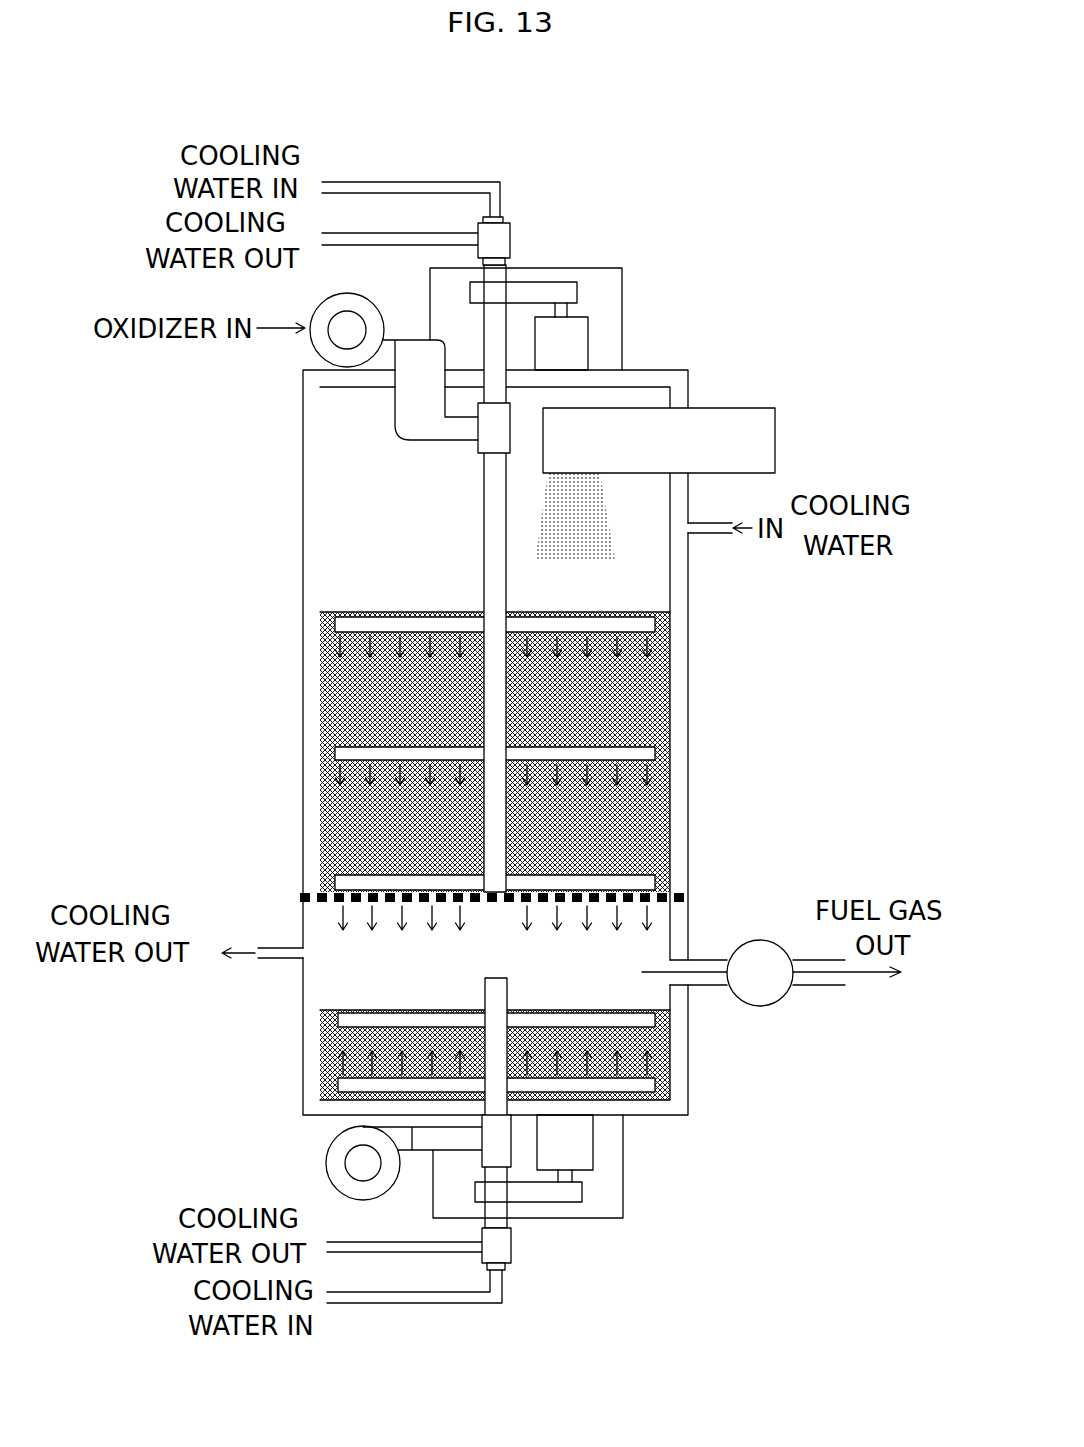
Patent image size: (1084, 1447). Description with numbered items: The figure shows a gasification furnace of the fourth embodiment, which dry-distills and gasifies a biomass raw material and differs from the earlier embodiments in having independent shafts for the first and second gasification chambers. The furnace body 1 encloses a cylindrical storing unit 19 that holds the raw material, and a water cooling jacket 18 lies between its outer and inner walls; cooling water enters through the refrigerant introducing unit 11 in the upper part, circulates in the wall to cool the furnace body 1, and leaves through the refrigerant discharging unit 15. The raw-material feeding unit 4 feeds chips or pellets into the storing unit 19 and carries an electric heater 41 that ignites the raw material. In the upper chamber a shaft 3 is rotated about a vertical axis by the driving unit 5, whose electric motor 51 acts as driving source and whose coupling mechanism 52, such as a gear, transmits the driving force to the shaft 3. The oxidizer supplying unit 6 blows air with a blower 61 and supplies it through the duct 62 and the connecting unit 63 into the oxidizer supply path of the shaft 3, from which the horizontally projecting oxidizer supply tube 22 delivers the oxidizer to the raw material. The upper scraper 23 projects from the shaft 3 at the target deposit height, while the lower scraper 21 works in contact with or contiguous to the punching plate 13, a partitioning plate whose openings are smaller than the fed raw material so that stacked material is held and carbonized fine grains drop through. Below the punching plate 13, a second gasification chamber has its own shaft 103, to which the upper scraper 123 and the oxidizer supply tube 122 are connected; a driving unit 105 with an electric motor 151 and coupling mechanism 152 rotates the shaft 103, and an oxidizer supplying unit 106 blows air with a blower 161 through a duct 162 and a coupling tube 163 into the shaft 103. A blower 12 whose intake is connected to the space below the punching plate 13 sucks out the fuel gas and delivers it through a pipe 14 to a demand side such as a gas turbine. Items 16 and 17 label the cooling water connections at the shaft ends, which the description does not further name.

The furnace body 1 is at (702, 721).
The shaft 3 is at (497, 492).
The raw-material feeding unit 4 is at (735, 420).
The electric heater 41 is at (737, 462).
The driving unit 5 is at (623, 253).
The electric motor 51 is at (575, 343).
The coupling mechanism 52 is at (528, 292).
The oxidizer supplying unit 6 is at (341, 385).
The blower 61 is at (321, 355).
The duct 62 is at (440, 410).
The connecting unit 63 is at (490, 440).
The refrigerant introducing unit 11 is at (712, 533).
The blower 12 is at (757, 945).
The punching plate 13 is at (345, 898).
The pipe 14 is at (812, 985).
The refrigerant discharging unit 15 is at (278, 962).
The cooling water inlet pipe 16 is at (363, 182).
The cooling water outlet pipe 17 is at (402, 233).
The water cooling jacket 18 is at (679, 650).
The storing unit 19 is at (342, 555).
The lower scraper 21 is at (335, 878).
The oxidizer supply tube 22 is at (337, 752).
The upper scraper 23 is at (337, 625).
The shaft 103 is at (507, 990).
The driving unit 105 is at (633, 1236).
The oxidizer supplying unit 106 is at (313, 1148).
The oxidizer supply tube 122 is at (340, 1085).
The upper scraper 123 is at (338, 1022).
The electric motor 151 is at (583, 1143).
The coupling mechanism 152 is at (538, 1193).
The blower 161 is at (340, 1180).
The duct 162 is at (433, 1145).
The coupling tube 163 is at (503, 1150).